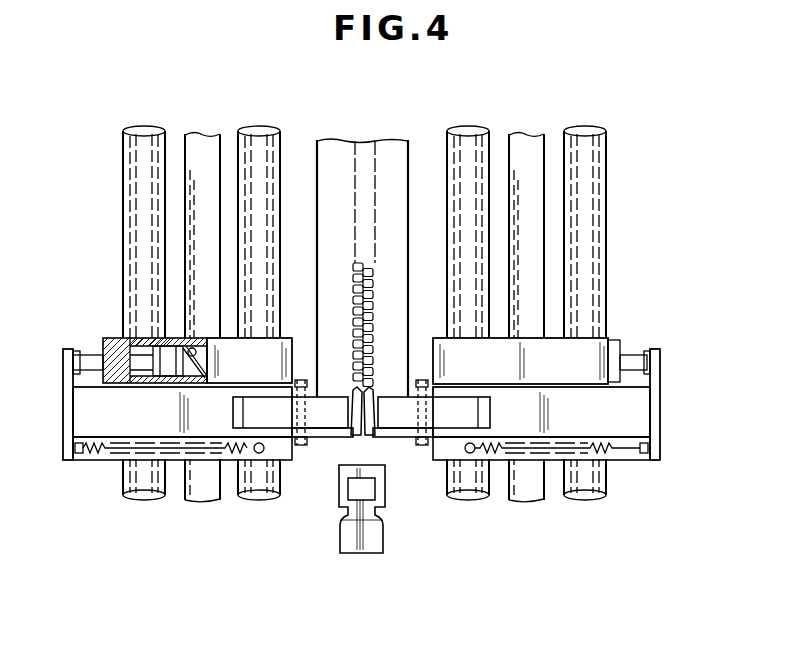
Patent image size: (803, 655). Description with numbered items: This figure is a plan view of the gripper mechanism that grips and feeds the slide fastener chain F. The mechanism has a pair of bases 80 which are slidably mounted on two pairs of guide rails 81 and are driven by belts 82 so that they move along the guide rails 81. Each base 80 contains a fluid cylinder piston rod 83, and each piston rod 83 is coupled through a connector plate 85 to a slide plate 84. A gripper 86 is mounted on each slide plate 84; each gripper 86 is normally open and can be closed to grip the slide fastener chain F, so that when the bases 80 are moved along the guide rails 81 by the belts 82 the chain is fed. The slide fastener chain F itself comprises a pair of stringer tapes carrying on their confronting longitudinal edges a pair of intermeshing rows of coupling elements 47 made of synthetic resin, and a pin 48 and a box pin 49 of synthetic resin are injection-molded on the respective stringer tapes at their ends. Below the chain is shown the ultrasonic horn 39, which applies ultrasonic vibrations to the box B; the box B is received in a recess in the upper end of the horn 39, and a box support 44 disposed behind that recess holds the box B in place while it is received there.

The guide rails 81 is at (148, 134).
The belts 82 is at (207, 145).
The slide fastener chain F is at (342, 150).
The coupling elements 47 is at (375, 322).
The pin 48 is at (351, 437).
The box pin 49 is at (372, 437).
The connector plate 85 is at (63, 410).
The fluid cylinder piston rods 83 is at (97, 360).
The bases 80 is at (277, 348).
The slide plate 84 is at (98, 430).
The gripper 86 is at (320, 428).
The ultrasonic horn 39 is at (343, 492).
The box B is at (372, 488).
The box support 44 is at (352, 545).